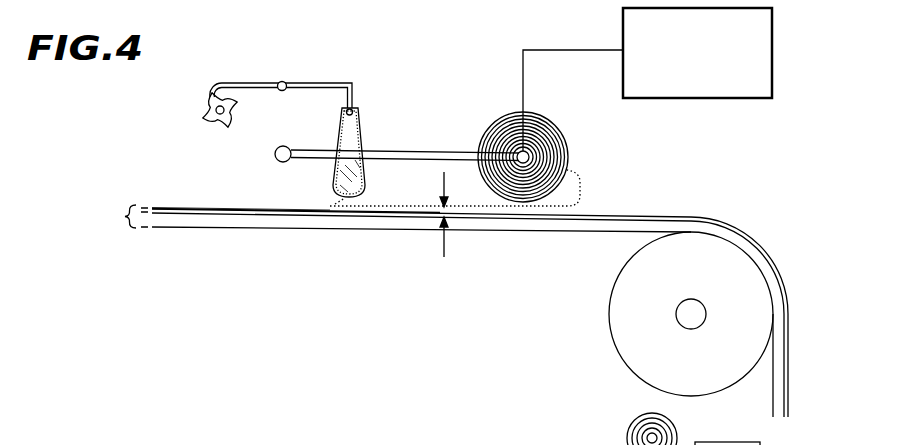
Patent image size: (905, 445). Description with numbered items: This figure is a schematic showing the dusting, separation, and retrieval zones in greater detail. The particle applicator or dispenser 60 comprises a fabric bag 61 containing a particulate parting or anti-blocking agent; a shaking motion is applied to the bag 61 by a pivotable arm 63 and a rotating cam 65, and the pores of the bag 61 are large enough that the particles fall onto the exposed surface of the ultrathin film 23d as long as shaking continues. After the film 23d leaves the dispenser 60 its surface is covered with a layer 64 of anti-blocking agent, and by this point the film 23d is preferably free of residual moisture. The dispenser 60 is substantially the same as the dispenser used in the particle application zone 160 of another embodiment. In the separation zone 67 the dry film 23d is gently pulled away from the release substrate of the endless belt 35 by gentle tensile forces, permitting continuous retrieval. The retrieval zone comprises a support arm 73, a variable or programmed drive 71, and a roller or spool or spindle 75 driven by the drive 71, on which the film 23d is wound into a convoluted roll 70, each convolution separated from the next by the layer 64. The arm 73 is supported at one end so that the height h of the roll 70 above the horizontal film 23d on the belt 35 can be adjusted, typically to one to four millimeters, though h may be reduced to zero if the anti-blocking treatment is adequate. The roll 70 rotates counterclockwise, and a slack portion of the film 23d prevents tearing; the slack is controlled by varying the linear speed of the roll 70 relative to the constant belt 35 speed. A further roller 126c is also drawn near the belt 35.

The endless belt 35 is at (439, 311).
The ultrathin film 23d is at (257, 208).
The particle applicator or dispenser 60 is at (340, 75).
The fabric bag 61 is at (359, 137).
The pivotable arm 63 is at (283, 81).
The layer of anti-blocking agent 64 is at (404, 204).
The rotating cam 65 is at (211, 122).
The separation zone 67 is at (584, 211).
The convoluted roll 70 is at (548, 130).
The variable or programmed drive 71 is at (683, 92).
The support arm 73 is at (423, 148).
The roller or spool or spindle 75 is at (530, 157).
The height of roll above film h is at (450, 225).
The roller 126c is at (626, 437).
The particle application zone 160 is at (764, 439).